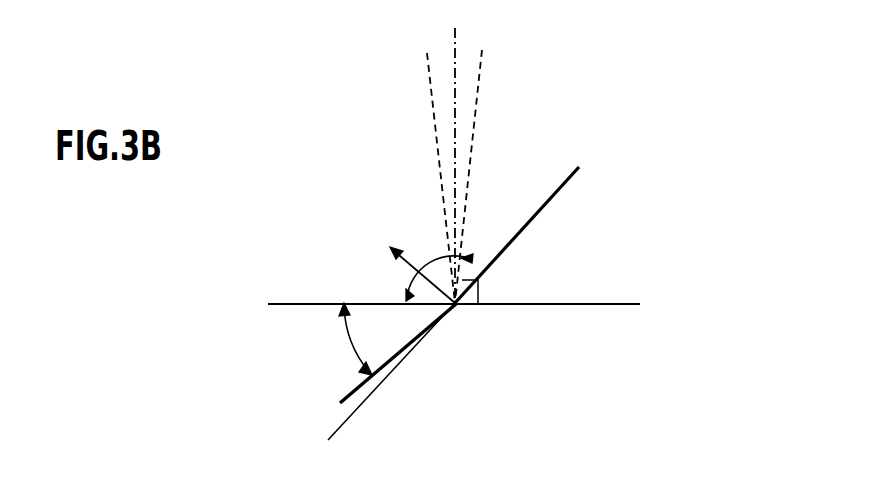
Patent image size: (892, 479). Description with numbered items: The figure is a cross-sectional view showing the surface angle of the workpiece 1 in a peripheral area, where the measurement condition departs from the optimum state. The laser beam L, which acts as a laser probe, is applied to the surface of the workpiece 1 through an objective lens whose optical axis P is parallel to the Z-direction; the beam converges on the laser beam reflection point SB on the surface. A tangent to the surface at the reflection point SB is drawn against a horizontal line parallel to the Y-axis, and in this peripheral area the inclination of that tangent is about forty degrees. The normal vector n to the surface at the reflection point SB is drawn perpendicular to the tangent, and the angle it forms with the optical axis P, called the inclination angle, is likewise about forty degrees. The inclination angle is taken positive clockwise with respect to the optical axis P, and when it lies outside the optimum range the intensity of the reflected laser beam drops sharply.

The optical axis P is at (457, 43).
The laser beam L is at (480, 102).
The normal vector n is at (411, 260).
The workpiece 1 is at (345, 400).
The laser beam reflection point SB is at (453, 305).